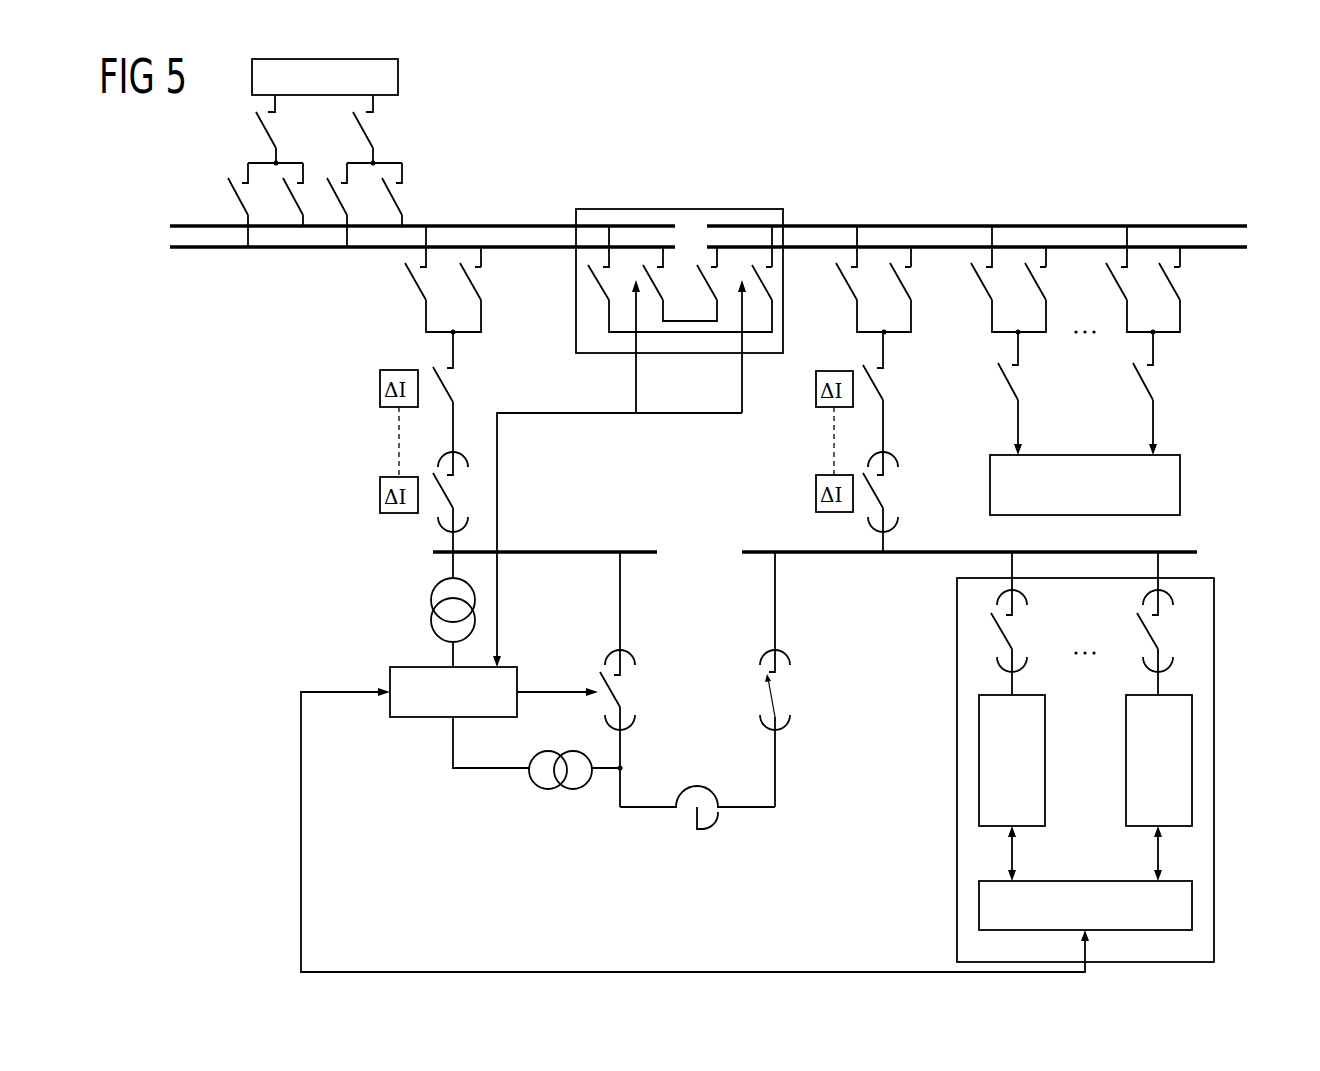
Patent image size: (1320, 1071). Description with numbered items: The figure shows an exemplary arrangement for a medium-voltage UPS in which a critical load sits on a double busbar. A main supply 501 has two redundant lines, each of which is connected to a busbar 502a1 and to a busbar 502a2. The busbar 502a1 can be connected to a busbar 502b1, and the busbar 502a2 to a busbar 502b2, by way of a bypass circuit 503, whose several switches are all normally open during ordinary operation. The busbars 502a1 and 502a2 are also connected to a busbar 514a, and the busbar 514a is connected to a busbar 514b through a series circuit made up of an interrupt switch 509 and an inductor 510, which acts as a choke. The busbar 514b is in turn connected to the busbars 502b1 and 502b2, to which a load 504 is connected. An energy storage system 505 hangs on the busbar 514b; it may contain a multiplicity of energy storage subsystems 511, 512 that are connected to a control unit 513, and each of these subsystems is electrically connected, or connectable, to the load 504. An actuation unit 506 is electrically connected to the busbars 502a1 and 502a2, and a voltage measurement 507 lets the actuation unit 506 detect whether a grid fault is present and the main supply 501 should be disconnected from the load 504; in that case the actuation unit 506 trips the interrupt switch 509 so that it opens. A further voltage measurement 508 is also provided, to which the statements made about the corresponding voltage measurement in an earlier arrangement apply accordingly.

The main supply 501 is at (399, 72).
The busbar 502a1 is at (188, 222).
The busbar 502a2 is at (217, 250).
The busbar 502b1 is at (1216, 223).
The busbar 502b2 is at (1227, 252).
The bypass circuit 503 is at (678, 209).
The load 504 is at (1181, 482).
The energy storage system 505 is at (1097, 757).
The actuation unit 506 is at (414, 718).
The voltage measurement 507 is at (432, 600).
The voltage measurement 508 is at (553, 793).
The interrupt switch 509 is at (620, 690).
The inductor 510 is at (717, 822).
The energy storage subsystem 511 is at (978, 737).
The energy storage subsystem 512 is at (1193, 737).
The control unit 513 is at (978, 892).
The busbar 514a is at (577, 550).
The busbar 514b is at (948, 550).